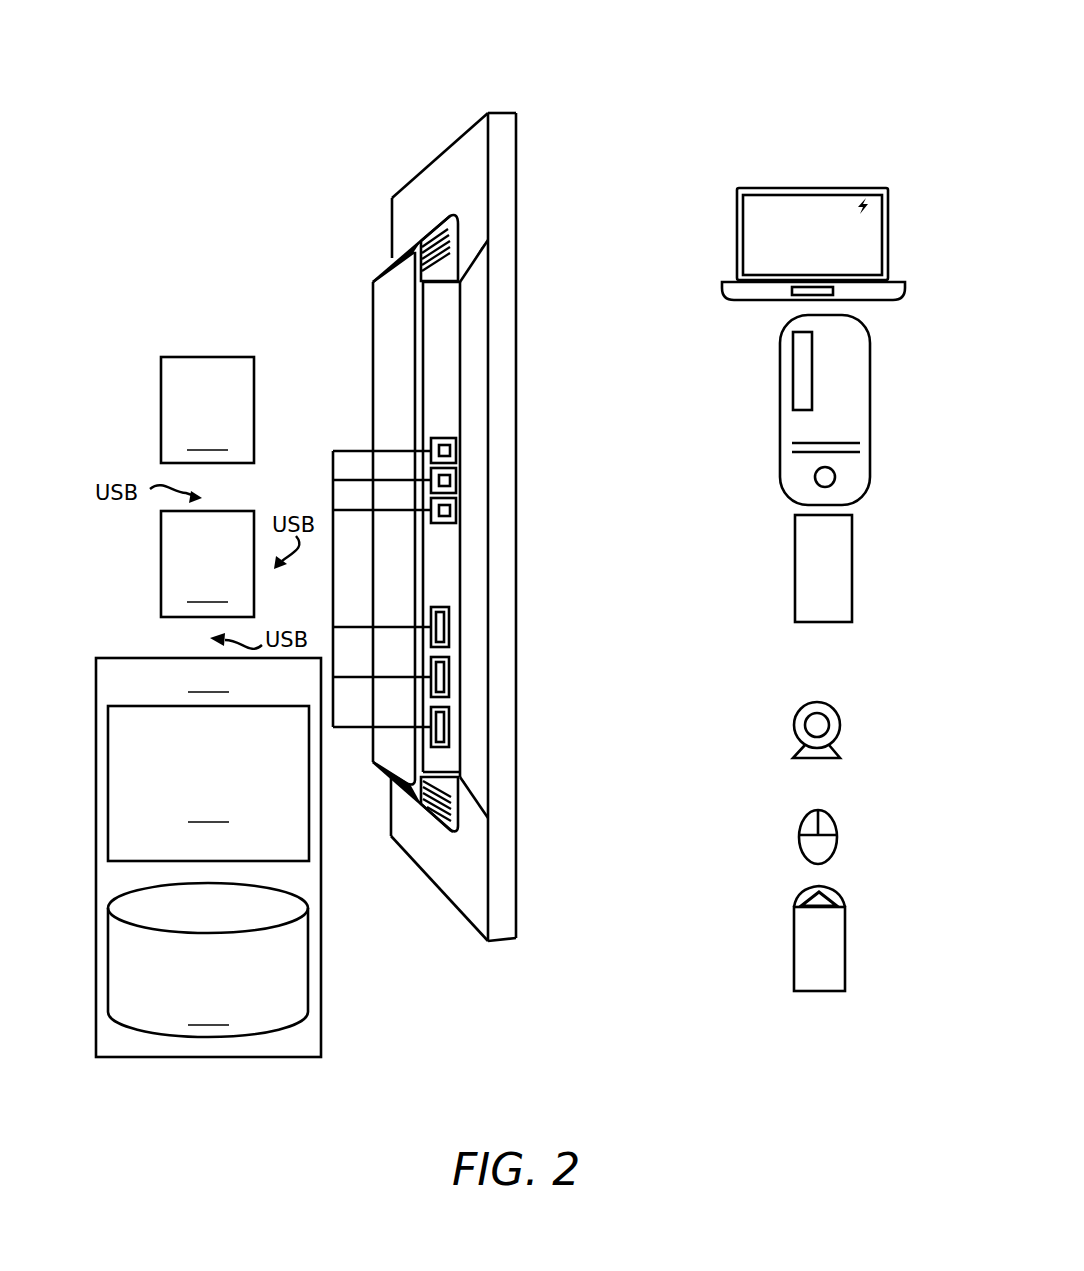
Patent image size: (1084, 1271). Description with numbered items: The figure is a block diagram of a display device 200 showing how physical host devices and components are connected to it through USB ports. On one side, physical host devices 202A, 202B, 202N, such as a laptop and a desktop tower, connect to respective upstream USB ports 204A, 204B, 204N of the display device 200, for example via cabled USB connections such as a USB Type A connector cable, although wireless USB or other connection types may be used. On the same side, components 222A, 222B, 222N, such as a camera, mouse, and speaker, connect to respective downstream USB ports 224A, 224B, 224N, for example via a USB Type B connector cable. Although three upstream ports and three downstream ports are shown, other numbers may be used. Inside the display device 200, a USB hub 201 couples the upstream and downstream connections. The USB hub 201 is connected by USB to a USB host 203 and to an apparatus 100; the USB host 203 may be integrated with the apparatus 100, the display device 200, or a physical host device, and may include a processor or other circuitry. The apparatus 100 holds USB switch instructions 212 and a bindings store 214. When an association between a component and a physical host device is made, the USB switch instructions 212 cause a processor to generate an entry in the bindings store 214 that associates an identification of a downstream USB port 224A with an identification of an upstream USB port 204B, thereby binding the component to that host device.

The apparatus 100 is at (208, 857).
The display device 200 is at (509, 99).
The USB hub 201 is at (207, 564).
The USB host 203 is at (207, 410).
The USB switch instructions 212 is at (208, 783).
The bindings store 214 is at (208, 960).
The physical host device 202A is at (604, 411).
The physical host device 202B is at (613, 457).
The physical host device 202N is at (795, 572).
The upstream USB port 204A is at (476, 447).
The upstream USB port 204B is at (476, 477).
The upstream USB port 204N is at (476, 507).
The component 222A is at (617, 640).
The component 222B is at (614, 691).
The component 222N is at (611, 743).
The downstream USB port 224A is at (469, 627).
The downstream USB port 224B is at (469, 677).
The downstream USB port 224N is at (469, 727).